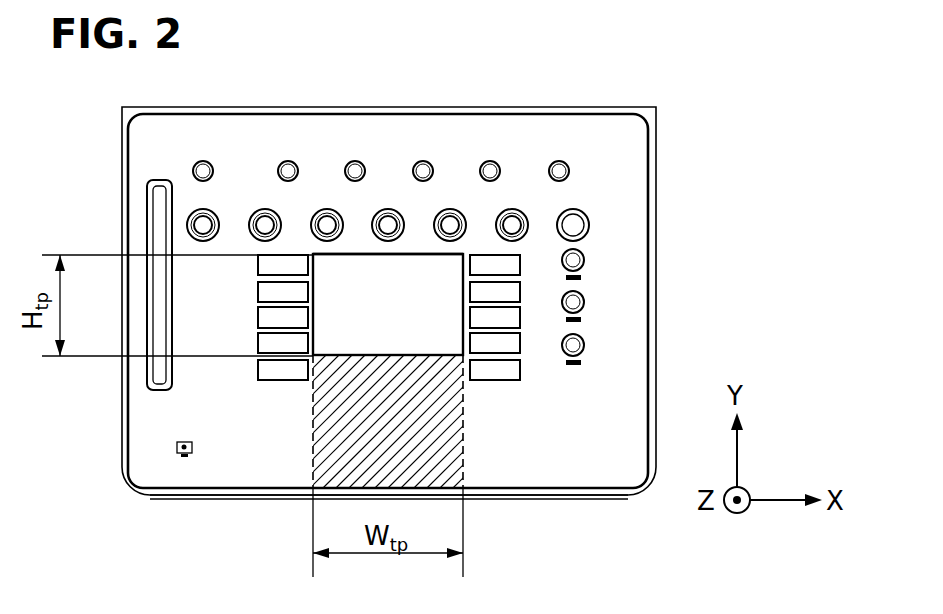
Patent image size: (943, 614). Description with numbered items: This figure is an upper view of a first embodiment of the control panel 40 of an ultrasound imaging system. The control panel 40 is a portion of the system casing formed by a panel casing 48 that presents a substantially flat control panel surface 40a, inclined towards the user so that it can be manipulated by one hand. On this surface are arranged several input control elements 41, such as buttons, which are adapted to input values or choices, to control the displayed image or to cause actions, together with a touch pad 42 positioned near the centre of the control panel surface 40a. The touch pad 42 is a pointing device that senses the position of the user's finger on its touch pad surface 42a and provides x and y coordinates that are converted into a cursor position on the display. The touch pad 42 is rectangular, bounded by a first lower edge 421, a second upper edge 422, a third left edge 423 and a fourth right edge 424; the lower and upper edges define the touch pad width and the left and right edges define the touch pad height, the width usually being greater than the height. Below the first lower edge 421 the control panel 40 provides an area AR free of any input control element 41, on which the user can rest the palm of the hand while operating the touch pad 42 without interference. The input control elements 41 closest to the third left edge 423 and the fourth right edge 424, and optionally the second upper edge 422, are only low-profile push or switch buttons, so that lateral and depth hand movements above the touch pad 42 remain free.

The control panel 40 is at (764, 105).
The control panel surface 40a is at (613, 390).
The input control elements 41 is at (285, 265).
The touch pad 42 is at (409, 287).
The touch pad surface 42a is at (415, 322).
The first lower edge 421 is at (313, 378).
The second upper edge 422 is at (355, 254).
The third left edge 423 is at (310, 333).
The fourth right edge 424 is at (468, 287).
The panel casing 48 is at (165, 500).
The area AR is at (418, 455).